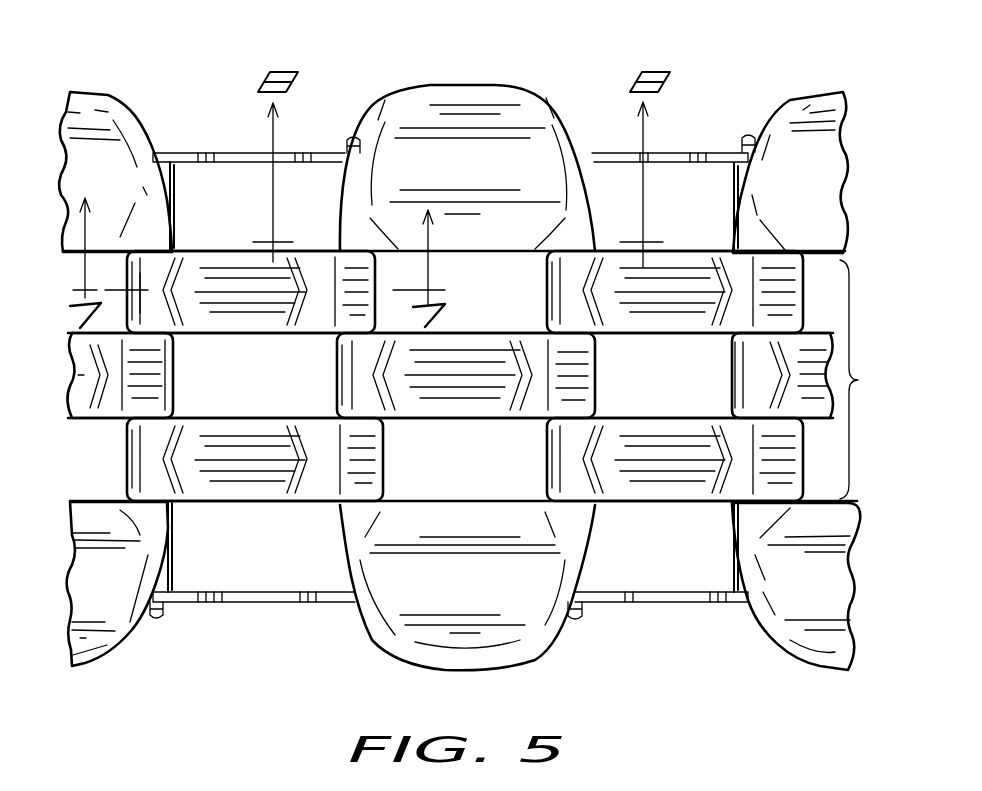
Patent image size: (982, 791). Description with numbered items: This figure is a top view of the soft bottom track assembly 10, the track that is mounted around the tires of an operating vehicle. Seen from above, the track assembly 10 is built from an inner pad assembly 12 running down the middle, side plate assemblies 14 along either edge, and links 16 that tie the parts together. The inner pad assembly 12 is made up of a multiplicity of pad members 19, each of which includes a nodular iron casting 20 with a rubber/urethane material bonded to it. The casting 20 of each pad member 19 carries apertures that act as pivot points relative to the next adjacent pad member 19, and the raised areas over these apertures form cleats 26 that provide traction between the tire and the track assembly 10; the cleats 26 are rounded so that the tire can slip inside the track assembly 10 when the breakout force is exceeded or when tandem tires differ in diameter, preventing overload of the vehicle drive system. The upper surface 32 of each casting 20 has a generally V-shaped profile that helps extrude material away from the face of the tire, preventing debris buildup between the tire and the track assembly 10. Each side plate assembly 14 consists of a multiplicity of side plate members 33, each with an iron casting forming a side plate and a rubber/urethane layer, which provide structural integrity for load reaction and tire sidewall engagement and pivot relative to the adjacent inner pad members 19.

The soft bottom track assembly 10 is at (320, 674).
The inner pad assembly 12 is at (475, 376).
The side plate assembly 14 is at (529, 83).
The links 16 is at (208, 152).
The pad members 19 is at (325, 400).
The nodular iron casting 20 is at (470, 352).
The cleats 26 is at (160, 260).
The upper surface 32 is at (700, 283).
The side plate members 33 is at (807, 78).